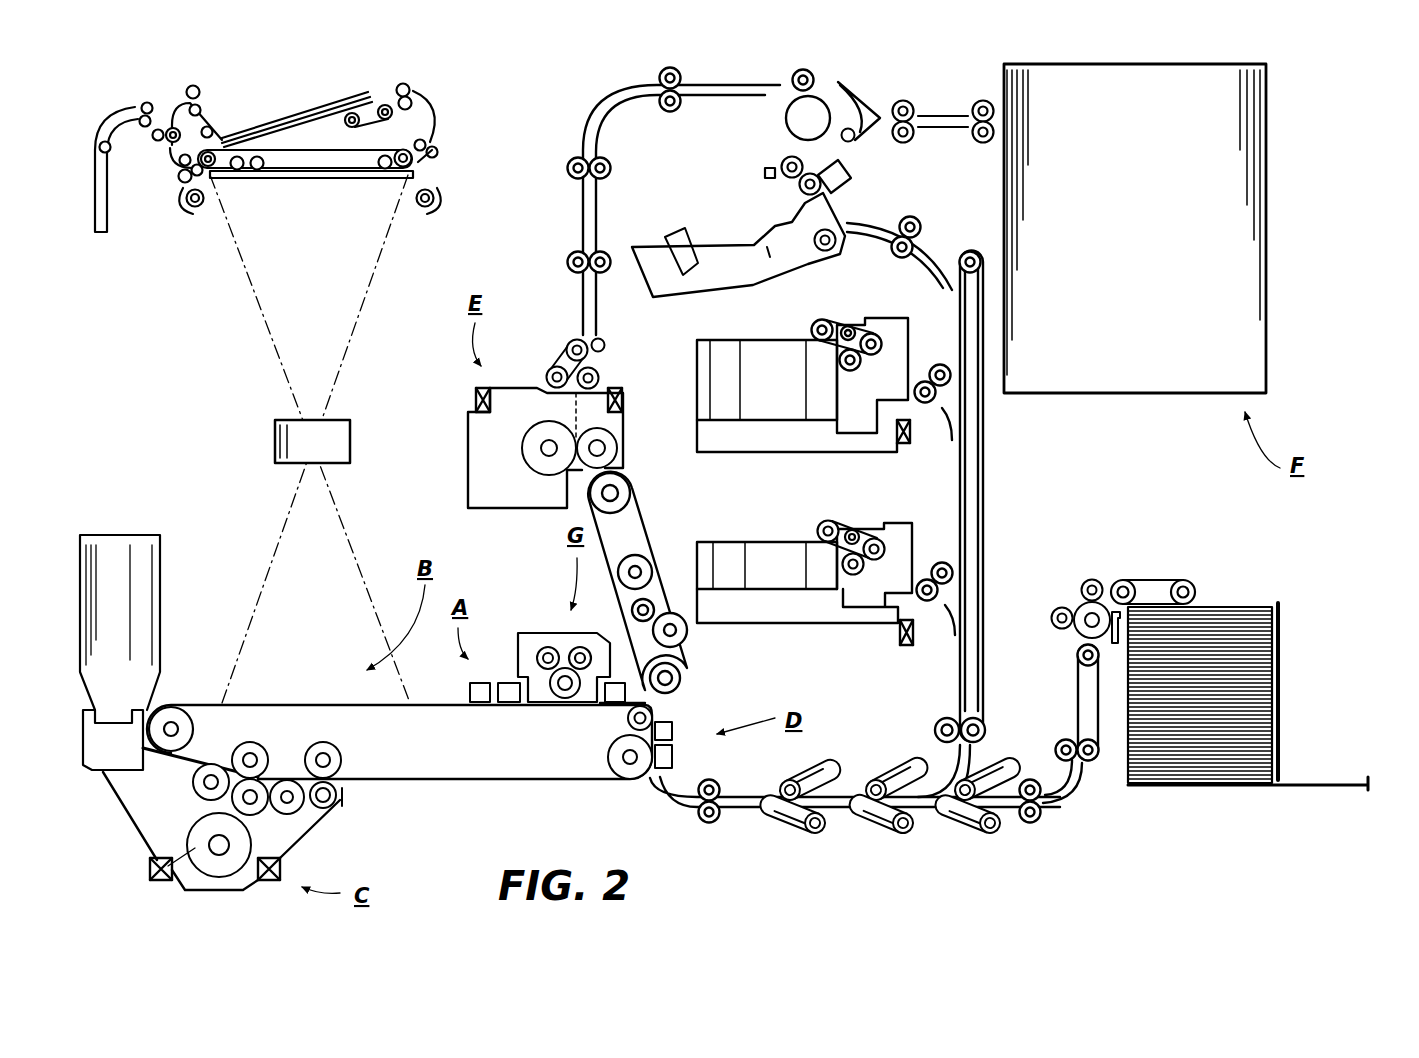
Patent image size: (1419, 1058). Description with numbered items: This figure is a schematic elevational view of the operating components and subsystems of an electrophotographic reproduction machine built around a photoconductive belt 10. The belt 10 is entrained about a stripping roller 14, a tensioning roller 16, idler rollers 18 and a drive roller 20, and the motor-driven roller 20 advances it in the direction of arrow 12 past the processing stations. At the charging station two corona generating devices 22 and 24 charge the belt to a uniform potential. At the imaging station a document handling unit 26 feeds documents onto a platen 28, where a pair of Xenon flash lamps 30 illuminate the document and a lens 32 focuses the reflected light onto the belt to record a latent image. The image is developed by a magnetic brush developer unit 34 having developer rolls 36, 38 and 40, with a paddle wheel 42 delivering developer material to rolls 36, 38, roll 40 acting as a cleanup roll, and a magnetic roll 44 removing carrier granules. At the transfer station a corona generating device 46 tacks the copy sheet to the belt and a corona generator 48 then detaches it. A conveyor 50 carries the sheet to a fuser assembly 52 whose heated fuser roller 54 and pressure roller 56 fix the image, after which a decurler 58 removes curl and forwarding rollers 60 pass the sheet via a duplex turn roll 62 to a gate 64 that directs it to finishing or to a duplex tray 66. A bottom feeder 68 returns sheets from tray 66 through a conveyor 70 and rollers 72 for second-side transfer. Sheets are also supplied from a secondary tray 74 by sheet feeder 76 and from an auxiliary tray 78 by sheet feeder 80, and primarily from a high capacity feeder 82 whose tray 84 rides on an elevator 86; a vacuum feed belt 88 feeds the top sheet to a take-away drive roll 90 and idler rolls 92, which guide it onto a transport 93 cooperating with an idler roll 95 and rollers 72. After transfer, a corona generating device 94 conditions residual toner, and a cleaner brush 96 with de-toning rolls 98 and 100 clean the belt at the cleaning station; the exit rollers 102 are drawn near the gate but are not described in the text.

The photoconductive belt 10 is at (450, 712).
The arrow 12 is at (512, 793).
The stripping roller 14 is at (625, 718).
The tensioning roller 16 is at (195, 706).
The idler rollers 18 is at (316, 744).
The drive roller 20 is at (614, 765).
The corona generating device 22 is at (506, 682).
The corona generating device 24 is at (462, 683).
The document handling unit 26 is at (463, 128).
The platen 28 is at (350, 180).
The Xenon flash lamps 30 is at (203, 208).
The lens 32 is at (338, 440).
The magnetic brush developer unit 34 is at (340, 827).
The developer roll 36 is at (186, 800).
The developer roll 38 is at (218, 811).
The developer roll 40 is at (275, 827).
The paddle wheel 42 is at (158, 870).
The magnetic roll 44 is at (347, 800).
The corona generating device 46 is at (673, 760).
The corona generator 48 is at (655, 718).
The conveyor 50 is at (690, 655).
The fuser assembly 52 is at (645, 402).
The heated fuser roller 54 is at (538, 453).
The pressure roller 56 is at (605, 450).
The decurler 58 is at (565, 352).
The forwarding rollers 60 is at (570, 160).
The duplex turn roll 62 is at (842, 136).
The gate 64 is at (858, 110).
The duplex tray 66 is at (722, 262).
The bottom feeder 68 is at (822, 252).
The conveyor 70 is at (985, 480).
The rollers 72 is at (700, 798).
The secondary tray 74 is at (805, 443).
The sheet feeder 76 is at (862, 312).
The auxiliary tray 78 is at (853, 617).
The sheet feeder 80 is at (842, 520).
The high capacity feeder 82 is at (1187, 673).
The tray 84 is at (1225, 757).
The elevator 86 is at (1245, 790).
The vacuum feed belt 88 is at (1160, 582).
The take away drive roll 90 is at (1090, 625).
The idler rolls 92 is at (1056, 610).
The transport 93 is at (1078, 695).
The corona generating device 94 is at (628, 694).
The idler roll 95 is at (1069, 752).
The cleaner brush 96 is at (563, 680).
The de-toning roll 98 is at (578, 650).
The de-toning roll 100 is at (545, 648).
The exit rollers 102 is at (990, 100).